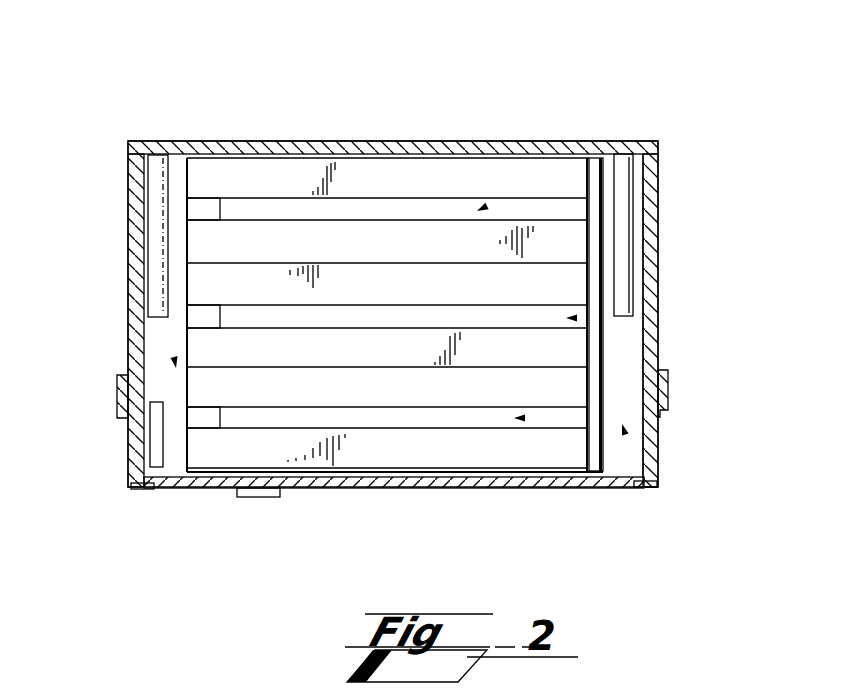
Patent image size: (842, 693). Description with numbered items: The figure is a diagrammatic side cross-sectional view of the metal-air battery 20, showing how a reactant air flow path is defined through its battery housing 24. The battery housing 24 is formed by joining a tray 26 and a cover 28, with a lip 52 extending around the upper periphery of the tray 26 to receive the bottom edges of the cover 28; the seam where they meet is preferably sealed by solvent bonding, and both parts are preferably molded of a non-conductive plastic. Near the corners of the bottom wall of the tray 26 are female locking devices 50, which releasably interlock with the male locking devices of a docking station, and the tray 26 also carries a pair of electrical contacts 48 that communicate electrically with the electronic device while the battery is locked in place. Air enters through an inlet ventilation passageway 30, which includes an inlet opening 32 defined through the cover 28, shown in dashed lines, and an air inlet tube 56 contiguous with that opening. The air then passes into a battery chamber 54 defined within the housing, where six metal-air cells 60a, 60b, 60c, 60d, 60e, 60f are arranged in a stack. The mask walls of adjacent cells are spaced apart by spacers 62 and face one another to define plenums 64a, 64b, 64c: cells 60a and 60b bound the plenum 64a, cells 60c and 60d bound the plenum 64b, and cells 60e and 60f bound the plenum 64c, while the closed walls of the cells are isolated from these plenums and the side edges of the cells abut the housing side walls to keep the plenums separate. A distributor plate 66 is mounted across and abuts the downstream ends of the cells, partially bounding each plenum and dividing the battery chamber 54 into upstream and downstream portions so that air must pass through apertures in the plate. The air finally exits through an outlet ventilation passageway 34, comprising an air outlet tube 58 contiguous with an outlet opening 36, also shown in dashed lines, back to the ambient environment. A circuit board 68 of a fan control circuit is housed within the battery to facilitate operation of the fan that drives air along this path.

The metal-air battery 20 is at (46, 133).
The battery housing 24 is at (393, 130).
The tray 26 is at (397, 488).
The cover 28 is at (656, 334).
The inlet ventilation passageway 30 is at (176, 196).
The inlet opening 32 is at (158, 141).
The outlet ventilation passageway 34 is at (654, 250).
The outlet opening 36 is at (617, 141).
The electrical contacts 48 is at (252, 497).
The female locking devices 50 is at (141, 490).
The lip 52 is at (117, 396).
The battery chamber 54 is at (175, 358).
The air inlet tube 56 is at (146, 220).
The air outlet tube 58 is at (635, 196).
The metal-air cell 60a is at (370, 188).
The metal-air cell 60b is at (372, 252).
The metal-air cell 60c is at (374, 296).
The metal-air cell 60d is at (382, 358).
The metal-air cell 60e is at (384, 397).
The metal-air cell 60f is at (383, 458).
The spacers 62 is at (220, 207).
The plenum 64a is at (487, 207).
The plenum 64b is at (577, 318).
The plenum 64c is at (526, 418).
The distributor plate 66 is at (600, 187).
The circuit board 68 is at (150, 447).